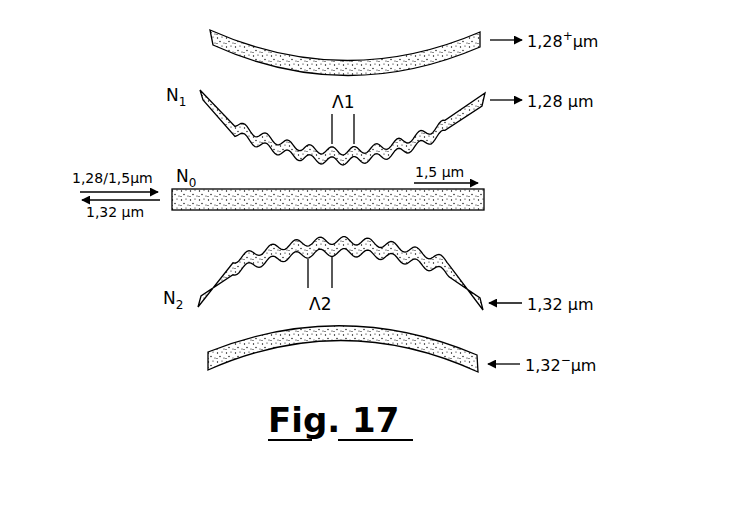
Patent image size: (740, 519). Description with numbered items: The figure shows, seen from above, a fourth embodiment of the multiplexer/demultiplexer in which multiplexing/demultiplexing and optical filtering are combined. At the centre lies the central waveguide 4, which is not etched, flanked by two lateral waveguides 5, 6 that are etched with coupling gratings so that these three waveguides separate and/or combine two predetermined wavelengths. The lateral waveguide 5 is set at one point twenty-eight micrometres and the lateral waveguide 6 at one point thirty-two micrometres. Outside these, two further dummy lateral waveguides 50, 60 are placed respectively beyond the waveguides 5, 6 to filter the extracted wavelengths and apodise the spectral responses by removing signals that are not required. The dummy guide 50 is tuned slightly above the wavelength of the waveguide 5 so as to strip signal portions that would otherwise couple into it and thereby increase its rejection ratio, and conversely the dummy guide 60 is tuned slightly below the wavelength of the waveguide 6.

The dummy lateral waveguide 50 is at (226, 43).
The lateral waveguide 5 is at (213, 121).
The central waveguide 4 is at (203, 211).
The lateral waveguide 6 is at (210, 301).
The dummy lateral waveguide 60 is at (240, 358).